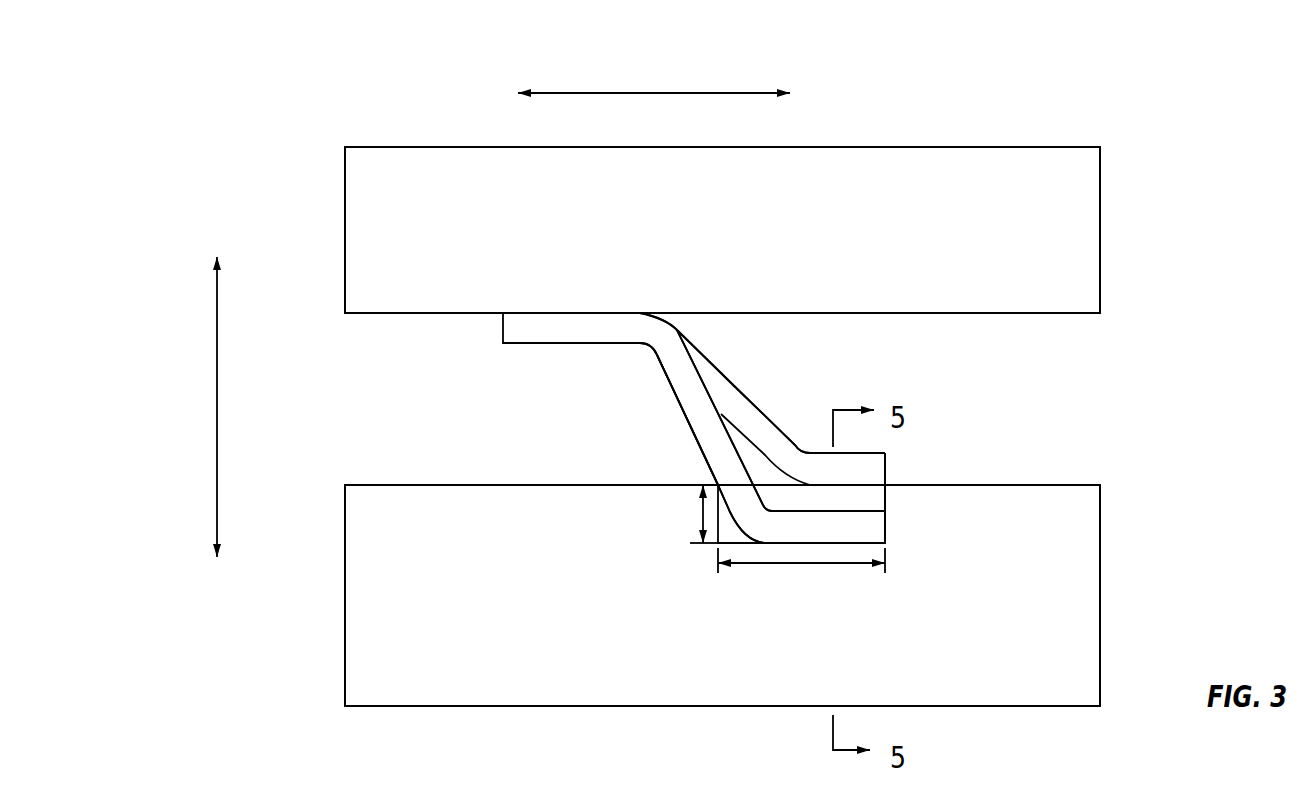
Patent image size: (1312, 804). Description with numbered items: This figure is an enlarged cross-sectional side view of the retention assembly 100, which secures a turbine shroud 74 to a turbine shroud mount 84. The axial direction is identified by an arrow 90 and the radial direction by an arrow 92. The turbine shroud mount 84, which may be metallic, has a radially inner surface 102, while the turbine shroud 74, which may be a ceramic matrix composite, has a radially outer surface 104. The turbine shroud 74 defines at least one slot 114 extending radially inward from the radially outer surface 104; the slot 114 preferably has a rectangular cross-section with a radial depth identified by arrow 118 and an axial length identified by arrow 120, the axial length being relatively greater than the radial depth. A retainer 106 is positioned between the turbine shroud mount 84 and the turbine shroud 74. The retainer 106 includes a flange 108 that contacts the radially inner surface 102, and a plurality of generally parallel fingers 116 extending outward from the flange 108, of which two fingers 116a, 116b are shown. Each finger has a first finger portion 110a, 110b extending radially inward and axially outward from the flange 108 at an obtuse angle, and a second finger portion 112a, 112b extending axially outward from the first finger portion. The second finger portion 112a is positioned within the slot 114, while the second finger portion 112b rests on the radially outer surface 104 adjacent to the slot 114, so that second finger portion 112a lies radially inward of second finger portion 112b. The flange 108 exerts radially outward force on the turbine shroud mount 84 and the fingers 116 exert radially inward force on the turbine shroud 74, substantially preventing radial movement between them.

The retention assembly 100 is at (188, 103).
The arrow 90 is at (653, 93).
The arrow 92 is at (216, 413).
The turbine shroud mount 84 is at (948, 183).
The radially inner surface 102 is at (1022, 313).
The radially outer surface 104 is at (1068, 485).
The turbine shroud 74 is at (1070, 580).
The retainer 106 is at (582, 395).
The flange 108 is at (525, 327).
The first finger portion 110a is at (672, 355).
The first finger portion 110b is at (752, 423).
The second finger portion 112a is at (828, 563).
The second finger portion 112b is at (873, 470).
The slot 114 is at (862, 500).
The fingers 116 is at (737, 345).
The finger 116a is at (671, 442).
The finger 116b is at (806, 404).
The arrow 118 is at (701, 512).
The arrow 120 is at (835, 525).